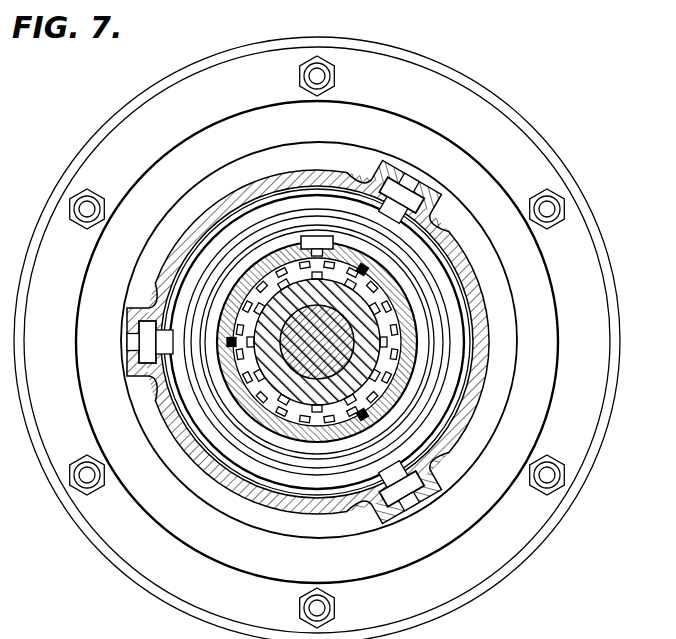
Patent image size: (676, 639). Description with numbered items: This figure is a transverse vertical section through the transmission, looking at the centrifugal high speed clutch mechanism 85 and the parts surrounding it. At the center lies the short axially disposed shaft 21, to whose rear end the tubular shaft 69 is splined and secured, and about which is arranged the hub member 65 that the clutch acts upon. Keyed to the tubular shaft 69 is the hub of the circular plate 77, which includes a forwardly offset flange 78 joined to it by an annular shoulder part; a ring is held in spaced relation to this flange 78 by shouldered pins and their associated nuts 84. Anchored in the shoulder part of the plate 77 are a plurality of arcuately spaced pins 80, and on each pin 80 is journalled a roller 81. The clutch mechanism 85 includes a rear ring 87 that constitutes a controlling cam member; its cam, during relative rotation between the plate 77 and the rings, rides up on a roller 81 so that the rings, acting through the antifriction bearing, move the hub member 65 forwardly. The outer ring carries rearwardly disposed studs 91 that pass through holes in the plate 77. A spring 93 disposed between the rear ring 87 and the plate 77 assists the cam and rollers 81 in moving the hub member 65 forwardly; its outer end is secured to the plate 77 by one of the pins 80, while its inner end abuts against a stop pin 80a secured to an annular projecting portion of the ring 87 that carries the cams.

The centrifugal high speed clutch mechanism 85 is at (93, 120).
The forwardly offset flange 78 is at (515, 150).
The nuts 84 is at (338, 75).
The stop pin 80a is at (315, 234).
The pins 80 is at (415, 183).
The roller 81 is at (431, 201).
The circular plate 77 is at (461, 254).
The studs 91 is at (401, 326).
The spring 93 is at (463, 363).
The short axially disposed shaft 21 is at (281, 305).
The rear ring 87 is at (203, 433).
The tubular shaft 69 is at (288, 400).
The hub member 65 is at (328, 412).